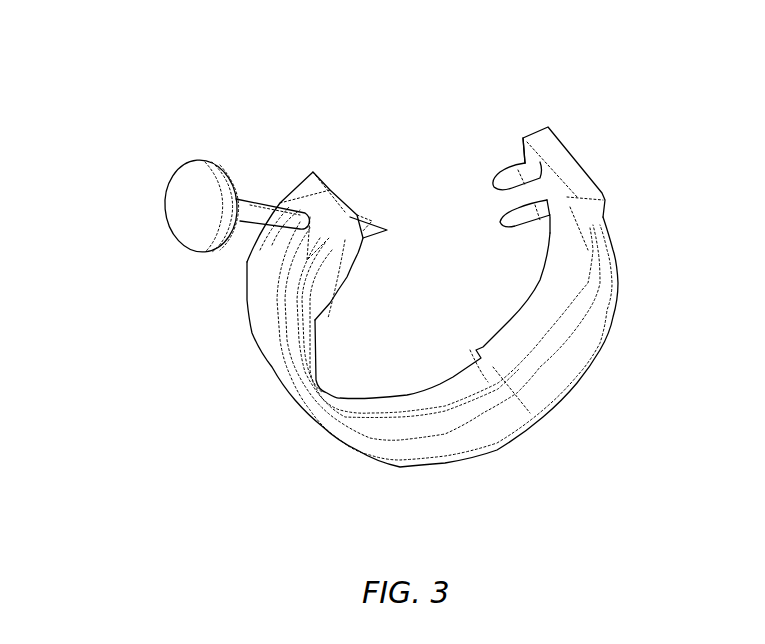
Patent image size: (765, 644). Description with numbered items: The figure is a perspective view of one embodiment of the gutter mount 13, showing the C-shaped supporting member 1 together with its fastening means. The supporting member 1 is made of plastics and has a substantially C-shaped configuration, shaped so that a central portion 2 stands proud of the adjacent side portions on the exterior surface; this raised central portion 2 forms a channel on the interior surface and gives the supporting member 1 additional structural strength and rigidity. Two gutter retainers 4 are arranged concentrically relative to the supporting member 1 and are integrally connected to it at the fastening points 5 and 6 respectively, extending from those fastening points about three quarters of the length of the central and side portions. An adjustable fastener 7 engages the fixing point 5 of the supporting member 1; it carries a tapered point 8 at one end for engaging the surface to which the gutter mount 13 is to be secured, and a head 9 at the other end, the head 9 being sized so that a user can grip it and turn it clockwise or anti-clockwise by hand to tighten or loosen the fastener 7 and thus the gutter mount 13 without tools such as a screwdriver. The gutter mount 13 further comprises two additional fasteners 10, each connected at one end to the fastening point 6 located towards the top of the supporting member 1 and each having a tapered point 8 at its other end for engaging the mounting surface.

The C-shaped supporting member 1 is at (515, 435).
The central portion 2 is at (268, 327).
The gutter retainers 4 is at (558, 349).
The fastening point 5 is at (330, 190).
The fastening point 6 is at (568, 168).
The adjustable fastener 7 is at (256, 171).
The tapered point 8 is at (500, 182).
The head 9 is at (183, 167).
The additional fasteners 10 is at (512, 162).
The gutter mount 13 is at (125, 77).